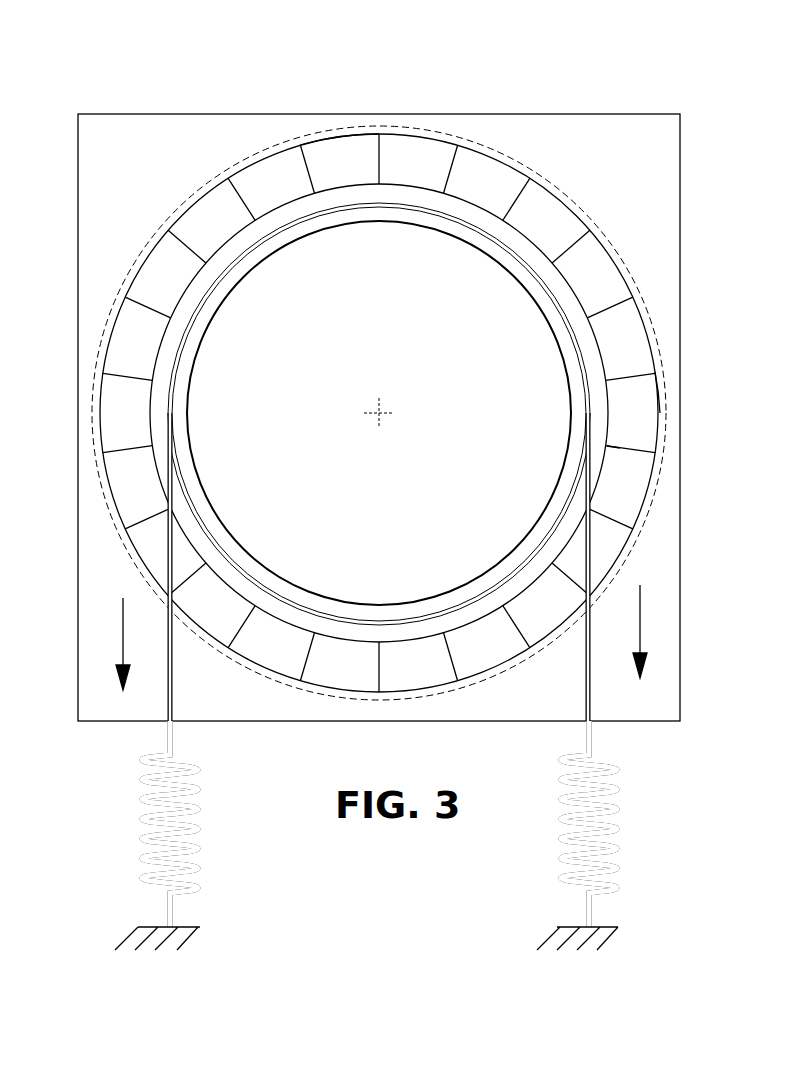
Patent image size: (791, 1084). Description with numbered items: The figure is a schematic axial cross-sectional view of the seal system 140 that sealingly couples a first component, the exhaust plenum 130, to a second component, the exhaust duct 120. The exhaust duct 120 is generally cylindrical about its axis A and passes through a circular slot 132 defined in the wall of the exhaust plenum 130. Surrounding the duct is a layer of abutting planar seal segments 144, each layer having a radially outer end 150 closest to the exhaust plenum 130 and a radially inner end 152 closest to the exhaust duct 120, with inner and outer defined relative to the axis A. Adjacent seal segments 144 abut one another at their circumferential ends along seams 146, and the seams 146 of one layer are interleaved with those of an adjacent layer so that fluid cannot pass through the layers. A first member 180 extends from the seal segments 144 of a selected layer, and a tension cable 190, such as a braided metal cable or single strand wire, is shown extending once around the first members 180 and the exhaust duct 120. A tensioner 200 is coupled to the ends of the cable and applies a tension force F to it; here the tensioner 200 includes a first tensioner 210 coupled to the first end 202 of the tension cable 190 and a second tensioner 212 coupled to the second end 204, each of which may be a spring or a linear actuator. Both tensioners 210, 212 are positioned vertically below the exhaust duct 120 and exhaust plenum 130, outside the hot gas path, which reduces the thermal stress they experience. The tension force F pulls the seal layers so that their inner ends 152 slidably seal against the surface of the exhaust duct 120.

The seal system 140 is at (386, 385).
The exhaust plenum 130 is at (680, 185).
The slot 132 is at (640, 265).
The outer end 150 is at (402, 147).
The inner end 152 is at (347, 185).
The planar seal segment 144 is at (637, 390).
The seam 146 is at (638, 450).
The exhaust duct 120 is at (250, 262).
The first member 180 is at (590, 362).
The tension cable 190 is at (592, 487).
The axis A is at (380, 414).
The tension force F is at (122, 637).
The first end 202 is at (170, 530).
The second end 204 is at (593, 537).
The first tensioner 210 is at (200, 867).
The second tensioner 212 is at (617, 870).
The tensioner 200 is at (133, 882).